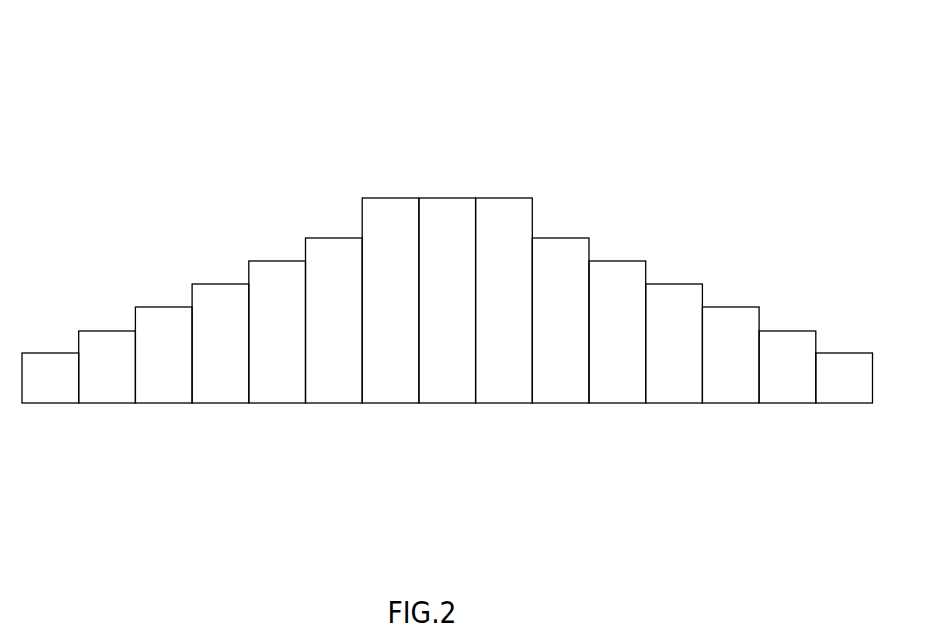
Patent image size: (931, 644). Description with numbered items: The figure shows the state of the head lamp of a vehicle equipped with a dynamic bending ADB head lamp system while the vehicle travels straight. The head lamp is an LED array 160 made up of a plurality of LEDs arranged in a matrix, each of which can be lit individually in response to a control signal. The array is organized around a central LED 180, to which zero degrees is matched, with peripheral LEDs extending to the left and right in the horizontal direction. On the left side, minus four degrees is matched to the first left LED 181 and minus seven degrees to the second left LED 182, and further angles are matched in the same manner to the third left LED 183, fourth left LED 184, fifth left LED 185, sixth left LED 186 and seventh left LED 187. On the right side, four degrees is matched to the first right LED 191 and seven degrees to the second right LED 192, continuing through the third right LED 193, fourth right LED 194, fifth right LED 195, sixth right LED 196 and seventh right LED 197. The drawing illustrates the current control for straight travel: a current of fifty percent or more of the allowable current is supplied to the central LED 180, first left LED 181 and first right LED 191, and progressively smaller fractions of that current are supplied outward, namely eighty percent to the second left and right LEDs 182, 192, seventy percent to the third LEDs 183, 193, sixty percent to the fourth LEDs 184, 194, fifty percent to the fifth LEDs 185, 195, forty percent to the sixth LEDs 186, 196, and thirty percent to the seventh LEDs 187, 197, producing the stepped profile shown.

The LED array 160 is at (263, 92).
The central LED 180 is at (447, 404).
The first left LED 181 is at (391, 404).
The second left LED 182 is at (334, 404).
The third left LED 183 is at (277, 404).
The fourth left LED 184 is at (220, 404).
The fifth left LED 185 is at (164, 404).
The sixth left LED 186 is at (107, 404).
The seventh left LED 187 is at (50, 404).
The first right LED 191 is at (504, 404).
The second right LED 192 is at (561, 404).
The third right LED 193 is at (617, 404).
The fourth right LED 194 is at (674, 404).
The fifth right LED 195 is at (731, 404).
The sixth right LED 196 is at (788, 404).
The seventh right LED 197 is at (844, 404).